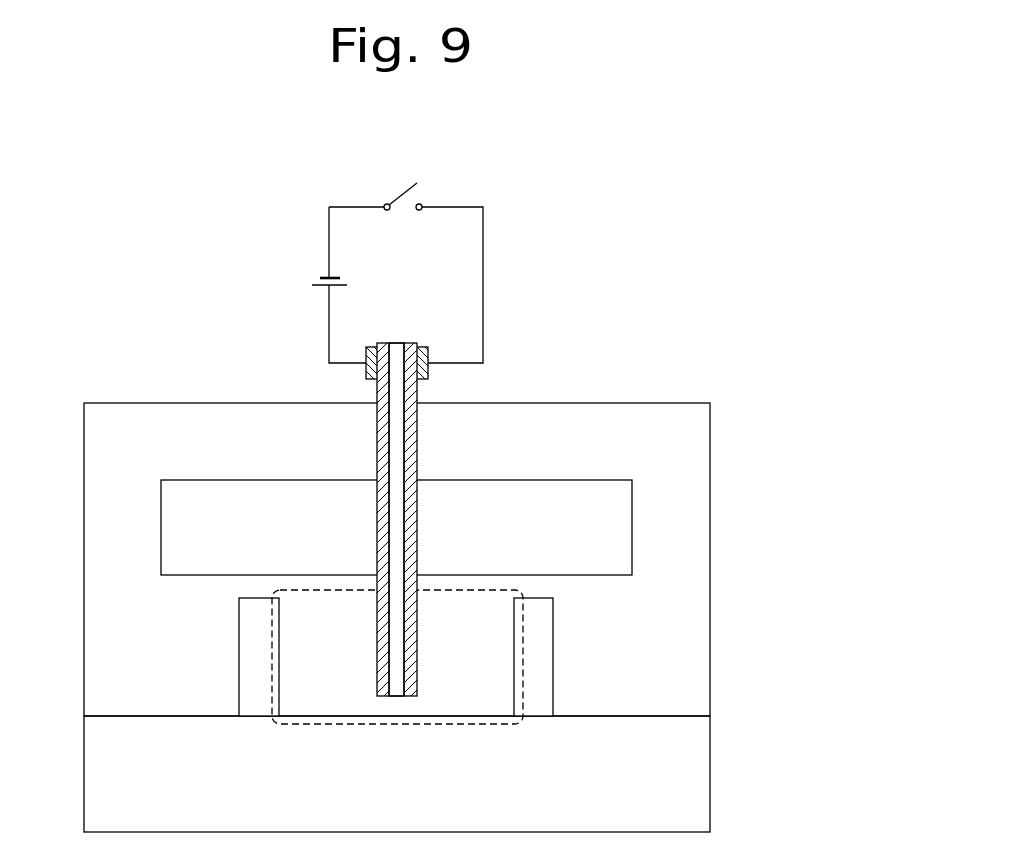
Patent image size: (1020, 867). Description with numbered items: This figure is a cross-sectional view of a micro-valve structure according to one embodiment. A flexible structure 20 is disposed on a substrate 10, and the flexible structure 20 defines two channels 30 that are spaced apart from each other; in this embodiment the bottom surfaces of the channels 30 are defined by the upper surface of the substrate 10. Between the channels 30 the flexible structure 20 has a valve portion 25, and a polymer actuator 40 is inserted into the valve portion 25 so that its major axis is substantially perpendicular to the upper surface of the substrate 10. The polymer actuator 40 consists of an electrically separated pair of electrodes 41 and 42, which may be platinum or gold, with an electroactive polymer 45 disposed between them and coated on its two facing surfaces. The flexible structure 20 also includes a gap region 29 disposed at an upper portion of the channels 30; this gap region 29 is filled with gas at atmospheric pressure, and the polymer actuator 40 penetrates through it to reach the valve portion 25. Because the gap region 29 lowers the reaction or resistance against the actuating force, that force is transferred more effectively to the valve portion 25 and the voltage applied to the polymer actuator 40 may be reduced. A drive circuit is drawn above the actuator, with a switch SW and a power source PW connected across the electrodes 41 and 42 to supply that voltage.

The substrate 10 is at (700, 766).
The flexible structure 20 is at (700, 633).
The valve portion 25 is at (393, 728).
The gap region 29 is at (632, 542).
The channels 30 is at (239, 661).
The polymer actuator 40 is at (517, 503).
The electrode 41 is at (383, 392).
The electrode 42 is at (410, 448).
The electroactive polymer 45 is at (397, 433).
The switch SW is at (406, 260).
The power source PW is at (312, 285).